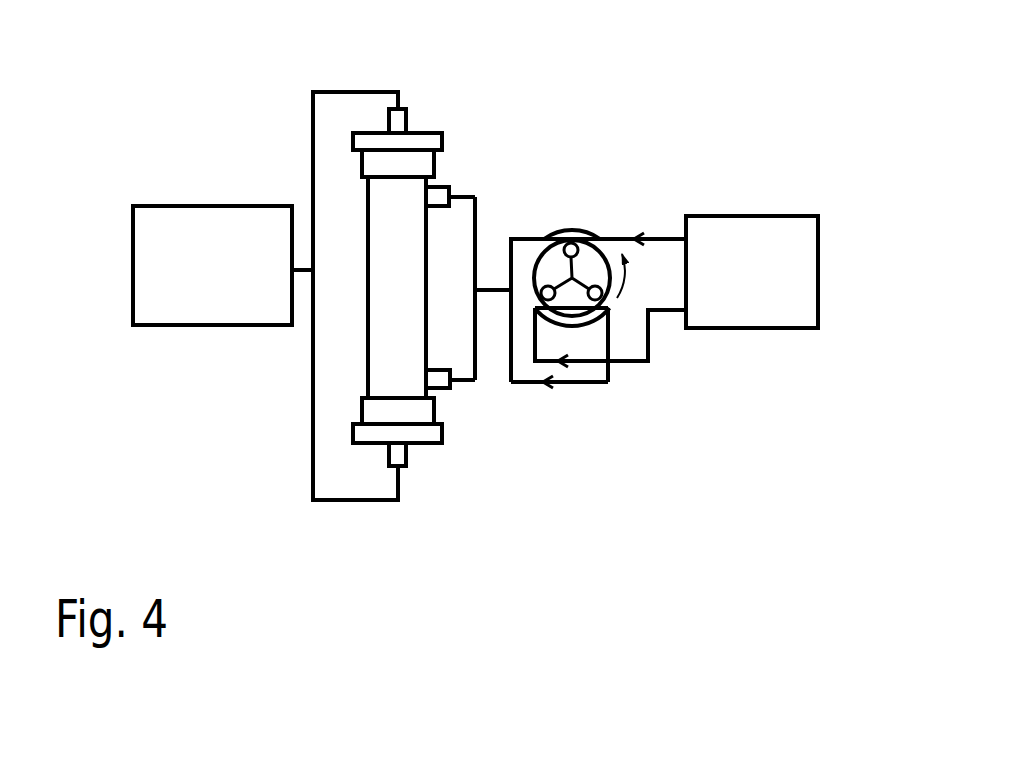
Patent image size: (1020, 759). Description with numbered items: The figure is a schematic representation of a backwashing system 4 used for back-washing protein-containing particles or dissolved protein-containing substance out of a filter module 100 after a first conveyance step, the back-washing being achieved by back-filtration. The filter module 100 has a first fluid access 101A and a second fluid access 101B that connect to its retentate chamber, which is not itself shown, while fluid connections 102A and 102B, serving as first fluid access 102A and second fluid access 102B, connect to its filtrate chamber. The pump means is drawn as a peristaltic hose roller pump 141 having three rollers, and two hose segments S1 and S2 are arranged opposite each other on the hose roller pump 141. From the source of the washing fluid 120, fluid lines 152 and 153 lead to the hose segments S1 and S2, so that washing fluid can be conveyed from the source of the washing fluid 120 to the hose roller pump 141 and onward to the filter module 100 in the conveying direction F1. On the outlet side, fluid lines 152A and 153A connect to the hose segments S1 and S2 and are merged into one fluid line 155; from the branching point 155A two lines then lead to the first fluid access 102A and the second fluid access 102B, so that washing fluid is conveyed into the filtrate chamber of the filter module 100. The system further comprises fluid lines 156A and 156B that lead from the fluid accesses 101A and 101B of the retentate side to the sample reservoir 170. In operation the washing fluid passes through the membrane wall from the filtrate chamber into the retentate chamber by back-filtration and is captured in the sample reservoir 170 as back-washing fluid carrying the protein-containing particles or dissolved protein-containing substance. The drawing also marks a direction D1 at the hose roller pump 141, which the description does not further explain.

The backwashing system 4 is at (810, 130).
The sample reservoir 170 is at (158, 331).
The fluid line 156B is at (362, 89).
The fluid line 156A is at (352, 505).
The first fluid access 101A is at (410, 112).
The second fluid access 101B is at (411, 470).
The filter module 100 is at (364, 378).
The first fluid access 102A is at (451, 185).
The second fluid access 102B is at (451, 399).
The fluid line 155 is at (493, 284).
The branching point 155A is at (483, 318).
The fluid line 152A is at (517, 236).
The fluid line 152 is at (662, 235).
The fluid line 153A is at (513, 392).
The fluid line 153 is at (628, 365).
The conveying direction F1 is at (568, 374).
The hose roller pump 141 is at (588, 232).
The hose segment S1 is at (567, 229).
The hose segment S2 is at (586, 332).
The rotation direction D1 is at (633, 276).
The source of the washing fluid 120 is at (755, 342).